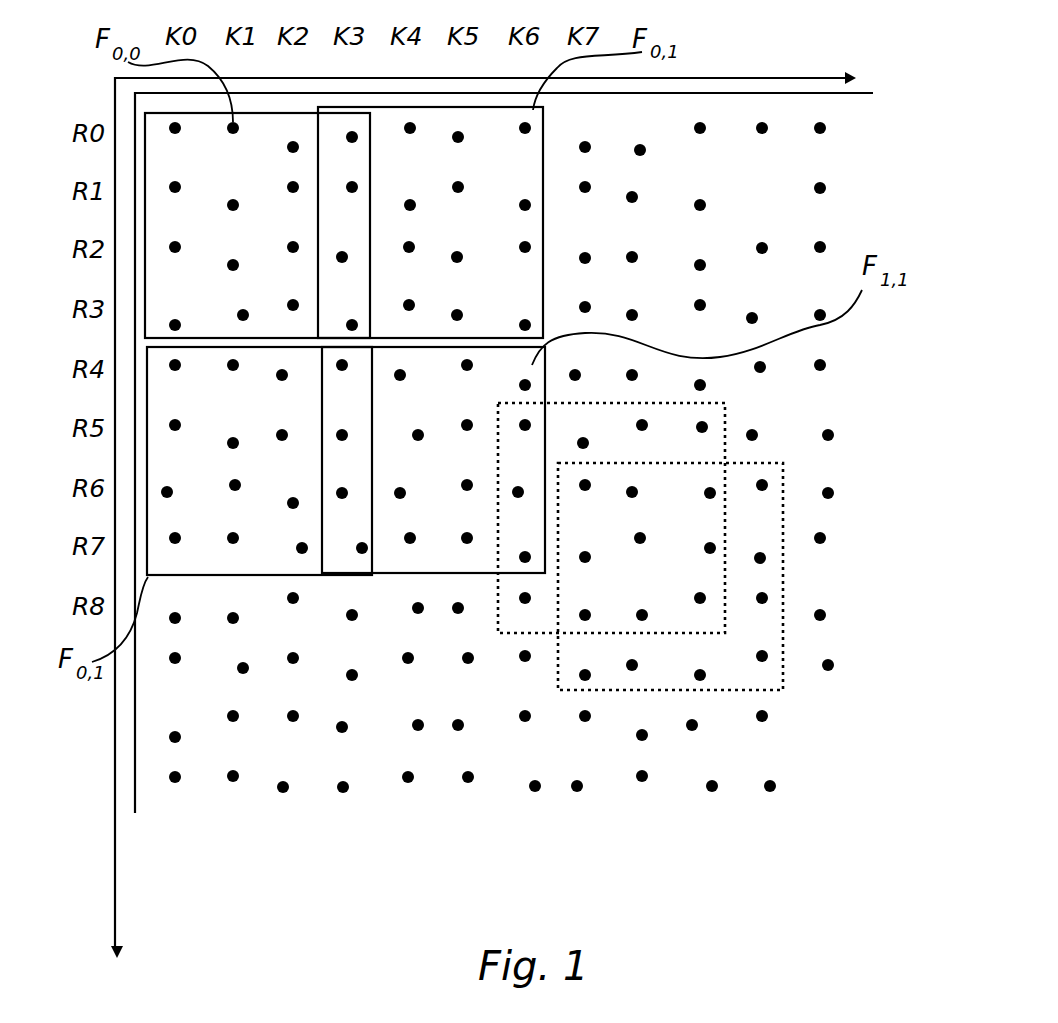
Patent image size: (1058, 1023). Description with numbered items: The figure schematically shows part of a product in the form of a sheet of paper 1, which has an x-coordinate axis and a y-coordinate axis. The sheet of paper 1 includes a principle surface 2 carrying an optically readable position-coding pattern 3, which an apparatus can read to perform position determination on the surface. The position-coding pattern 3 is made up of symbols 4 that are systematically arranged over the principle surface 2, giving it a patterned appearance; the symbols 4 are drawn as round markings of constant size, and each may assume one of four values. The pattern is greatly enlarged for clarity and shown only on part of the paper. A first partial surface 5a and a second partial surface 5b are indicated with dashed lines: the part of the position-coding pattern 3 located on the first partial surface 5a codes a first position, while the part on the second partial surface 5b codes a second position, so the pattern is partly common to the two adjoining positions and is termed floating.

The sheet of paper 1 is at (878, 86).
The principle surface 2 is at (480, 866).
The position-coding pattern 3 is at (343, 798).
The symbols 4 is at (644, 781).
The first partial surface 5a is at (712, 422).
The second partial surface 5b is at (773, 505).